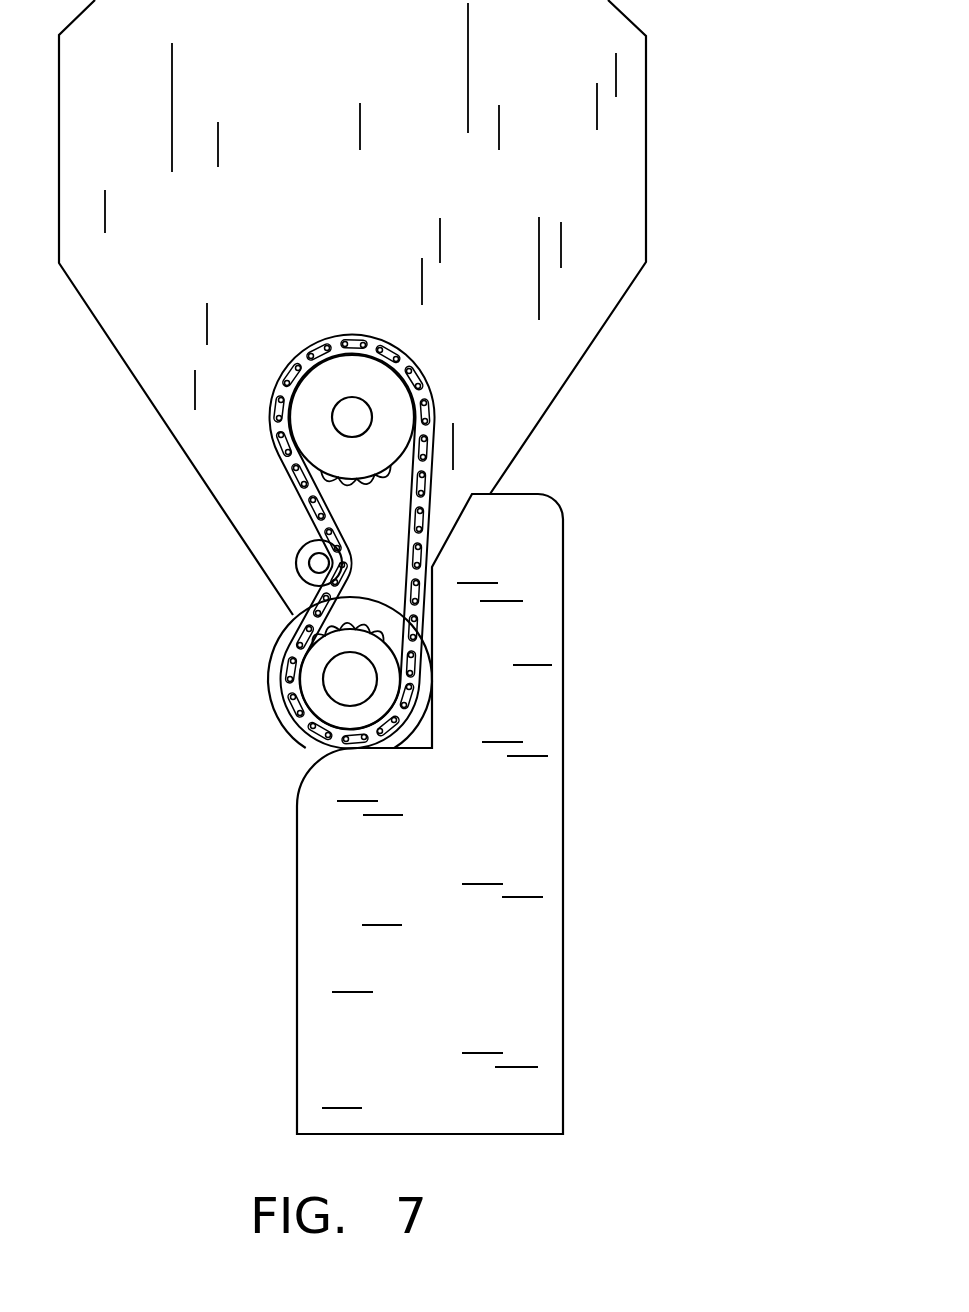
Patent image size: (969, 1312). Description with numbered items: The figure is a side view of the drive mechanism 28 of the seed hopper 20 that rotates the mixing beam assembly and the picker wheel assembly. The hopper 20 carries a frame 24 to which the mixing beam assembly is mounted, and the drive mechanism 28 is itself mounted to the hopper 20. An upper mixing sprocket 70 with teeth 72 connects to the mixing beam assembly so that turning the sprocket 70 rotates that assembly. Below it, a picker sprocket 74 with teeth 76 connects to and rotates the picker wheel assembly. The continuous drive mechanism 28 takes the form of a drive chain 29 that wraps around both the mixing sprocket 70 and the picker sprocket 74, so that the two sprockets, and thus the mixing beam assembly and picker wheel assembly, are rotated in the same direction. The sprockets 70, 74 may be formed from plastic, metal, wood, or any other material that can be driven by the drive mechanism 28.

The hopper 20 is at (647, 158).
The frame 24 is at (537, 1023).
The drive mechanism 28 is at (300, 508).
The drive chain 29 is at (313, 522).
The mixing sprocket 70 is at (403, 402).
The teeth 72 is at (403, 476).
The picker sprocket 74 is at (332, 708).
The teeth 76 is at (300, 612).